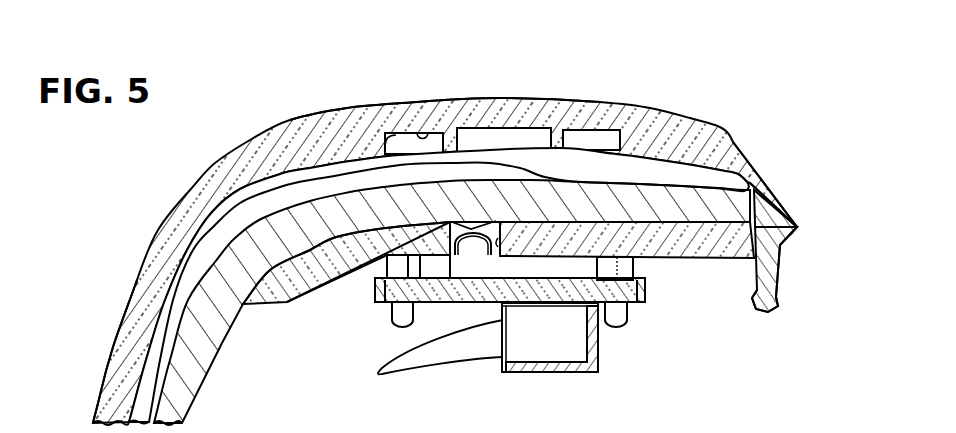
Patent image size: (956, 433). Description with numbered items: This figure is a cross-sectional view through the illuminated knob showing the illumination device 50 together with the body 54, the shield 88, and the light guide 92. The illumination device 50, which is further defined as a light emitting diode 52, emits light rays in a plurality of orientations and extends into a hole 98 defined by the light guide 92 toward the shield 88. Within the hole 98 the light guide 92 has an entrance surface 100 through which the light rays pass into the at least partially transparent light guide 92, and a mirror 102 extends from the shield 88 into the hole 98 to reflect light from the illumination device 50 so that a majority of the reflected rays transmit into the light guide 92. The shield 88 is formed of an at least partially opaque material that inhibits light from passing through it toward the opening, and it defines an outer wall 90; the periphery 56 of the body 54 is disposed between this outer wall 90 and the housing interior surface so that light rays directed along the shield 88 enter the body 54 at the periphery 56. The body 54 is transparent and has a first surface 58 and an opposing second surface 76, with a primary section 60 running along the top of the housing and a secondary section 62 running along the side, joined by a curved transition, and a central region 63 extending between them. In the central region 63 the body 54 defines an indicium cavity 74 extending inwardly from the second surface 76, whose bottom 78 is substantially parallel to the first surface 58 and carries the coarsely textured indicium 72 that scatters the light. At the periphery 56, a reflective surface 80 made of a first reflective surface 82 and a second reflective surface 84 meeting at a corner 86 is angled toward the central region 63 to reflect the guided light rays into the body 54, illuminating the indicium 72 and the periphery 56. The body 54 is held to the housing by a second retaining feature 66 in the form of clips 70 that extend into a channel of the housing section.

The illumination device 50 is at (462, 235).
The light emitting diode 52 is at (482, 242).
The body 54 is at (632, 117).
The periphery 56 is at (786, 243).
The first surface 58 is at (537, 100).
The primary section 60 is at (393, 125).
The secondary section 62 is at (113, 347).
The central region 63 is at (498, 100).
The second retaining feature 66 is at (774, 298).
The clips 70 is at (753, 300).
The indicium 72 is at (447, 130).
The indicium cavity 74 is at (383, 133).
The second surface 76 is at (299, 170).
The bottom 78 is at (423, 134).
The reflective surface 80 is at (787, 212).
The first reflective surface 82 is at (790, 238).
The second reflective surface 84 is at (776, 197).
The corner 86 is at (800, 228).
The shield 88 is at (233, 310).
The outer wall 90 is at (769, 195).
The light guide 92 is at (297, 285).
The hole 98 is at (453, 220).
The entrance surface 100 is at (494, 242).
The mirror 102 is at (473, 222).